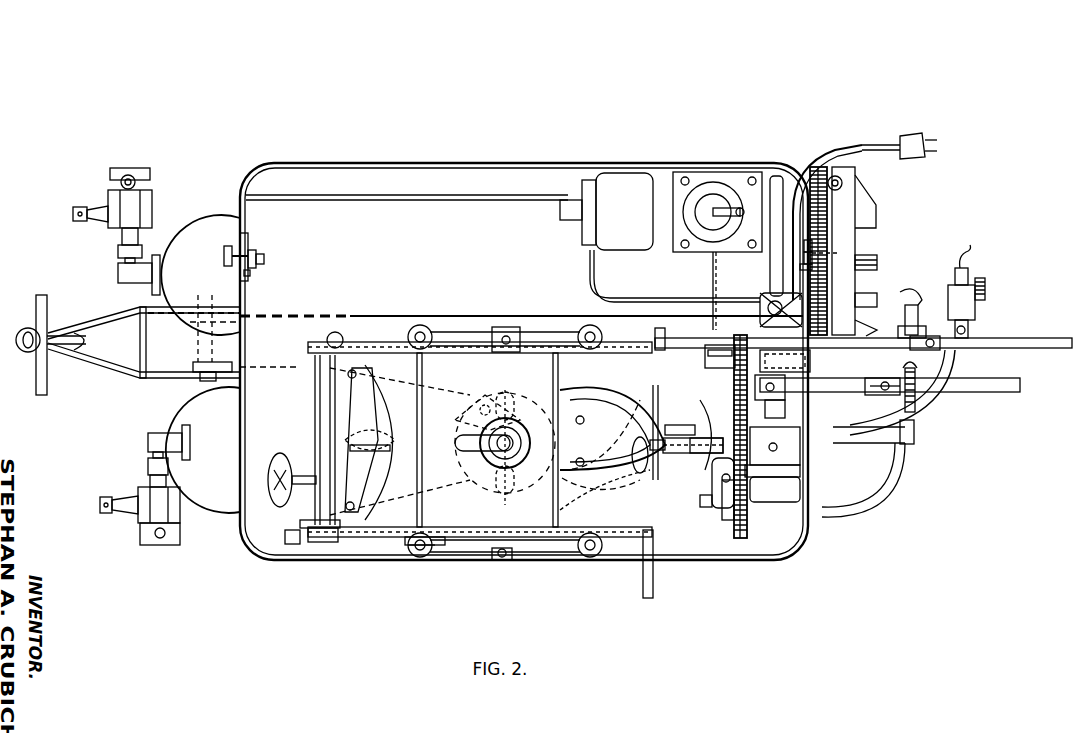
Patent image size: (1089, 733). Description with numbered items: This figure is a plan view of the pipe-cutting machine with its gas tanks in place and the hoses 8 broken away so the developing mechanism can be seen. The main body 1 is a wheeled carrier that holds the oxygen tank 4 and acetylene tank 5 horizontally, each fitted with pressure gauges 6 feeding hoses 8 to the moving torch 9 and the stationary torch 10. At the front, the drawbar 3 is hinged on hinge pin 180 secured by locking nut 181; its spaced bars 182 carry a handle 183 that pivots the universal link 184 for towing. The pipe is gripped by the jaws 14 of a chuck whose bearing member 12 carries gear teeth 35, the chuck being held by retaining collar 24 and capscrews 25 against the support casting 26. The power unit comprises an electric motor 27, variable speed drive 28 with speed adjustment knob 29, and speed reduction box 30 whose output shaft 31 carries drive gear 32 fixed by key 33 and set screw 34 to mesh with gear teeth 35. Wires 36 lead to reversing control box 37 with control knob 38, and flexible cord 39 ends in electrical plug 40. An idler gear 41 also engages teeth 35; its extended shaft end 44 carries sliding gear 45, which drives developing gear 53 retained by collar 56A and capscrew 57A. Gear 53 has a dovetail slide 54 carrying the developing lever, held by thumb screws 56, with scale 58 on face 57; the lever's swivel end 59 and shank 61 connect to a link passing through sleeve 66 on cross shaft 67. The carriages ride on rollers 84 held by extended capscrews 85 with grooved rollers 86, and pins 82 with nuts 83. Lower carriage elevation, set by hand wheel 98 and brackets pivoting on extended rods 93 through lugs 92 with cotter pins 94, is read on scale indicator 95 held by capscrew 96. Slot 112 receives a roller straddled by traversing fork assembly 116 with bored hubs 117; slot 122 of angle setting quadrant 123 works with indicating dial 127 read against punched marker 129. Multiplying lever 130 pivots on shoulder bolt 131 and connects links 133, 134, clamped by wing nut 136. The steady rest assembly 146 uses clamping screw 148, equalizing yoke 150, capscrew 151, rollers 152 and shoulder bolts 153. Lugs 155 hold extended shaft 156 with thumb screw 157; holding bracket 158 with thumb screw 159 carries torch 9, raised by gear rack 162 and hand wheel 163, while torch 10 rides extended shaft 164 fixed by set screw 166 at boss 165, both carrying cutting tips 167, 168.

The main body 1 is at (470, 165).
The drawbar 3 is at (140, 376).
The oxygen tank 4 is at (200, 218).
The acetylene tank 5 is at (214, 500).
The pressure gauges 6 is at (150, 196).
The hoses 8 is at (950, 402).
The moving torch 9 is at (968, 326).
The stationary torch 10 is at (898, 328).
The bearing member 12 is at (666, 468).
The jaws 14 is at (870, 200).
The retaining collar 24 is at (720, 264).
The capscrews 25 is at (729, 291).
The support casting 26 is at (790, 502).
The electric motor 27 is at (620, 172).
The variable speed drive 28 is at (698, 172).
The speed adjustment knob 29 is at (722, 200).
The speed reduction box 30 is at (776, 176).
The output shaft 31 is at (812, 258).
The drive gear 32 is at (812, 268).
The key 33 is at (830, 253).
The set screw 34 is at (812, 243).
The gear teeth 35 is at (840, 177).
The wires 36 is at (590, 286).
The reversing control box 37 is at (770, 303).
The control knob 38 is at (768, 308).
The flexible cord 39 is at (838, 150).
The electrical plug 40 is at (915, 136).
The idler gear 41 is at (810, 366).
The extended shaft end 44 is at (705, 356).
The sliding gear 45 is at (708, 362).
The developing gear 53 is at (748, 516).
The dovetail slide 54 is at (705, 425).
The thumb screws 56 is at (713, 483).
The collar 56A is at (805, 470).
The face 57 is at (728, 512).
The capscrew 57A is at (802, 450).
The scale 58 is at (708, 504).
The swivel end 59 is at (692, 438).
The shank 61 is at (705, 456).
The sleeve 66 is at (668, 426).
The cross shaft 67 is at (667, 427).
The pins 82 is at (424, 326).
The nuts 83 is at (641, 560).
The rollers 84 is at (418, 558).
The extended capscrews 85 is at (432, 560).
The grooved rollers 86 is at (440, 550).
The lugs 92 is at (287, 544).
The extended rods 93 is at (302, 522).
The cotter pins 94 is at (323, 544).
The scale indicator 95 is at (520, 556).
The capscrew 96 is at (502, 560).
The hand wheel 98 is at (274, 492).
The elongated slot 112 is at (498, 498).
The traversing fork assembly 116 is at (616, 412).
The bored hubs 117 is at (656, 440).
The elongated slot 122 is at (586, 478).
The angle setting quadrant 123 is at (601, 498).
The indicating dial 127 is at (490, 455).
The punched marker 129 is at (520, 425).
The multiplying lever 130 is at (345, 408).
The shoulder bolt 131 is at (345, 434).
The link 133 is at (415, 540).
The link 134 is at (376, 345).
The wing nut 136 is at (360, 520).
The steady rest assembly 146 is at (250, 278).
The clamping screw 148 is at (224, 256).
The equalizing yoke 150 is at (258, 254).
The capscrew 151 is at (260, 262).
The rollers 152 is at (247, 240).
The shoulder bolts 153 is at (238, 248).
The lugs 155 is at (576, 330).
The extended shaft 156 is at (1028, 338).
The thumb screw 157 is at (506, 327).
The holding bracket 158 is at (871, 396).
The thumb screw 159 is at (914, 432).
The gear rack 162 is at (900, 372).
The hand wheel 163 is at (986, 296).
The extended shaft 164 is at (1000, 392).
The block 165 is at (790, 404).
The set screw 166 is at (772, 395).
The cutting tip 167 is at (969, 264).
The cutting tip 168 is at (909, 296).
The hinge pin 180 is at (200, 378).
The locking nut 181 is at (205, 328).
The spaced bars 182 is at (88, 352).
The handle 183 is at (36, 312).
The universal link 184 is at (24, 352).